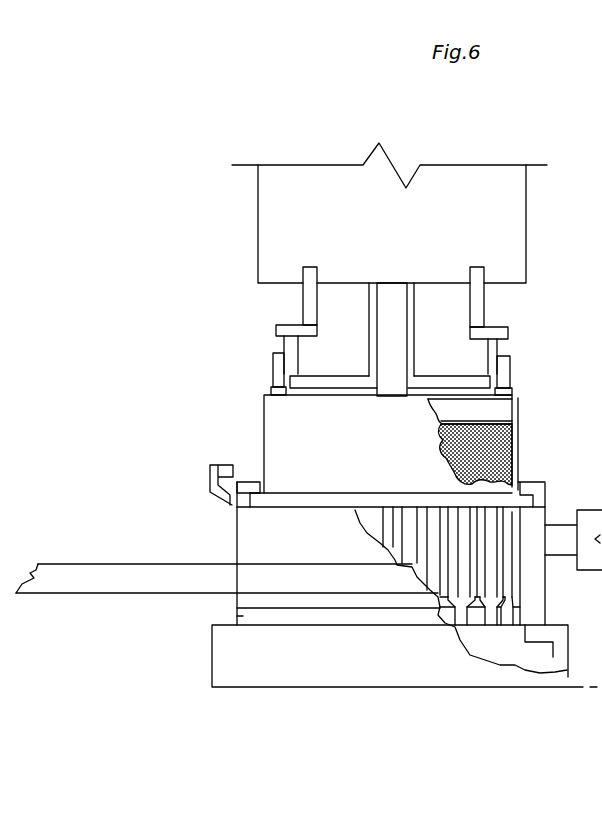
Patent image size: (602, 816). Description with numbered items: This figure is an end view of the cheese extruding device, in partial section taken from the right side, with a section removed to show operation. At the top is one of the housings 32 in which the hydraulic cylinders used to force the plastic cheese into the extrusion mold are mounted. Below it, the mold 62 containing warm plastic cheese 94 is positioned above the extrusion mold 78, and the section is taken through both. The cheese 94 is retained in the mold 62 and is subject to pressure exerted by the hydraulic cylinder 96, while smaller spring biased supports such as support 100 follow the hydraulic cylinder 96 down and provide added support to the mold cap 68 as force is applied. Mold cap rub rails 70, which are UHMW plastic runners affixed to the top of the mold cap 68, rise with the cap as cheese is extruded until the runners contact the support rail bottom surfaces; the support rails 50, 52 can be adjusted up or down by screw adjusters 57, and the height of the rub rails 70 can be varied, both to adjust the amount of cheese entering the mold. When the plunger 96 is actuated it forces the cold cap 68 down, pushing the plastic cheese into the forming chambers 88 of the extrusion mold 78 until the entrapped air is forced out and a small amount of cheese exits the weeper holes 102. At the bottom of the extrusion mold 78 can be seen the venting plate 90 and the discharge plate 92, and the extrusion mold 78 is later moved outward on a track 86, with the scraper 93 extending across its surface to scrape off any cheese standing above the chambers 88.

The housing 32 is at (303, 203).
The screw adjusters 57 is at (295, 323).
The hydraulic cylinder 96 is at (393, 330).
The spring biased support 100 is at (412, 312).
The mold cap rub rails 70 is at (270, 388).
The support rail 50 is at (273, 360).
The support rail 52 is at (510, 360).
The mold cap 68 is at (500, 415).
The mold 62 is at (518, 430).
The cheese 94 is at (508, 455).
The scraper 93 is at (210, 478).
The forming chambers 88 is at (502, 518).
The weeper holes 102 is at (455, 623).
The track 86 is at (135, 582).
The venting plate 90 is at (237, 603).
The discharge plate 92 is at (237, 616).
The extrusion mold 78 is at (532, 548).